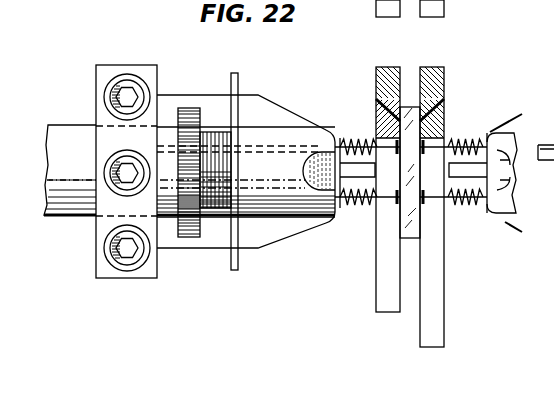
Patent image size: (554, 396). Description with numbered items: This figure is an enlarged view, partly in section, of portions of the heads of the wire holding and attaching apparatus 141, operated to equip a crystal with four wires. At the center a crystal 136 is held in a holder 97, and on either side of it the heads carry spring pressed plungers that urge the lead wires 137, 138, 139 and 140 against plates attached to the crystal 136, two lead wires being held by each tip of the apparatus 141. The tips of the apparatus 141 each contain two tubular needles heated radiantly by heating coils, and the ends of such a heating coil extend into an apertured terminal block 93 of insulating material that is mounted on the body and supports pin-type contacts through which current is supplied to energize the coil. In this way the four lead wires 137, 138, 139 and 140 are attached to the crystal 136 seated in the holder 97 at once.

The terminal block 93 is at (105, 72).
The apparatus 141 is at (120, 280).
The holder 97 is at (435, 67).
The crystal 136 is at (406, 104).
The lead wire 137 is at (378, 135).
The lead wire 138 is at (441, 138).
The lead wire 139 is at (378, 206).
The lead wire 140 is at (443, 206).